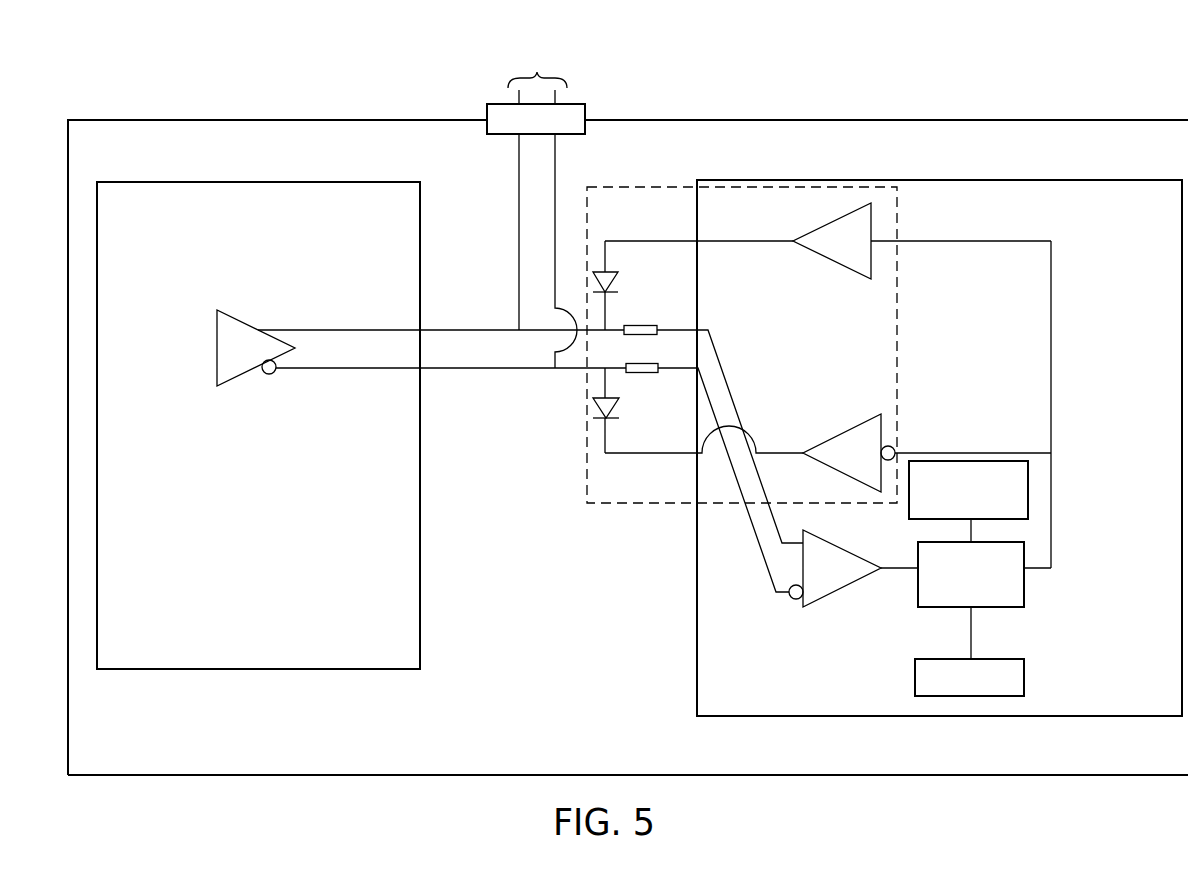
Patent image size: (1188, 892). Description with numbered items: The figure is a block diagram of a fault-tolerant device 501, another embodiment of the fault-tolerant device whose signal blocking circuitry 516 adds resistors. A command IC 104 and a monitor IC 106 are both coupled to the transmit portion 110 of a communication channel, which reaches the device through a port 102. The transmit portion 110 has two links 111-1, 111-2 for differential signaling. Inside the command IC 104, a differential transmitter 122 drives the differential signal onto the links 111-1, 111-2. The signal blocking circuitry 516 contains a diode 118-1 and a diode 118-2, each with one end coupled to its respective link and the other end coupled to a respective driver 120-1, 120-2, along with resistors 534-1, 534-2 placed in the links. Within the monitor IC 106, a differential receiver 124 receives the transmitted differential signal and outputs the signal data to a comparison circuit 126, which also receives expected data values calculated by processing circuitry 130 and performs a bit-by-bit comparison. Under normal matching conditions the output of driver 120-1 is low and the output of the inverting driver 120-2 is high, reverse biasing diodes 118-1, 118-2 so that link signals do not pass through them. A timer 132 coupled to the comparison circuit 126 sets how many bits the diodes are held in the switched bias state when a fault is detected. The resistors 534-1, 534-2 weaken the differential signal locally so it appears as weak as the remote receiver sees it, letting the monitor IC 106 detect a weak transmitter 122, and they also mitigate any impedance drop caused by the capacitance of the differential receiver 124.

The fault-tolerant device 501 is at (1118, 120).
The command IC 104 is at (333, 182).
The monitor IC 106 is at (1077, 179).
The port 102 is at (586, 110).
The transmit portion 110 is at (538, 72).
The link 111-1 is at (519, 179).
The link 111-2 is at (496, 370).
The differential transmitter 122 is at (245, 322).
The signal blocking circuitry 516 is at (624, 187).
The diode 118-1 is at (612, 272).
The diode 118-2 is at (610, 420).
The resistor 534-1 is at (644, 325).
The resistor 534-2 is at (648, 373).
The driver 120-1 is at (832, 262).
The driver 120-2 is at (830, 433).
The differential receiver 124 is at (830, 556).
The processing circuitry 130 is at (984, 460).
The comparison circuit 126 is at (1026, 578).
The timer 132 is at (1026, 676).